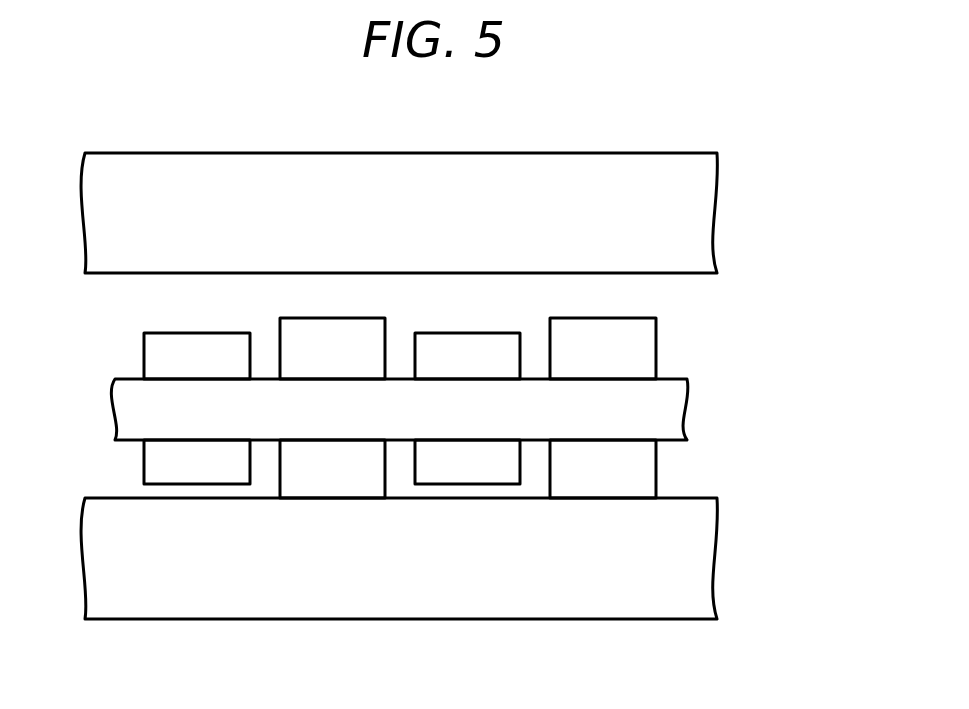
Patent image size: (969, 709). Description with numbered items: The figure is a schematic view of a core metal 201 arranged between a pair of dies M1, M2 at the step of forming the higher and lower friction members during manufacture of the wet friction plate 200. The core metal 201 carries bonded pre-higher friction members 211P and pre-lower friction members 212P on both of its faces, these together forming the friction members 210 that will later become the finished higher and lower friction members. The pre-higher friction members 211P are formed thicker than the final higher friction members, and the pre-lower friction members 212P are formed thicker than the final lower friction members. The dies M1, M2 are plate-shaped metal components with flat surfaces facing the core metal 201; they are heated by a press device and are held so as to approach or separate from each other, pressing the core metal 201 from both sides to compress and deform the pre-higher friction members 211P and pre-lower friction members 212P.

The die M2 is at (143, 153).
The die M1 is at (143, 620).
The wet friction plate 200 is at (427, 394).
The core metal 201 is at (127, 410).
The friction members 210 is at (485, 394).
The pre-lower friction member 212P is at (505, 333).
The pre-higher friction member 211P is at (656, 339).